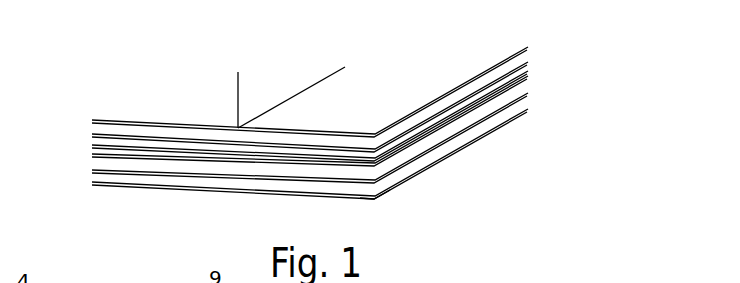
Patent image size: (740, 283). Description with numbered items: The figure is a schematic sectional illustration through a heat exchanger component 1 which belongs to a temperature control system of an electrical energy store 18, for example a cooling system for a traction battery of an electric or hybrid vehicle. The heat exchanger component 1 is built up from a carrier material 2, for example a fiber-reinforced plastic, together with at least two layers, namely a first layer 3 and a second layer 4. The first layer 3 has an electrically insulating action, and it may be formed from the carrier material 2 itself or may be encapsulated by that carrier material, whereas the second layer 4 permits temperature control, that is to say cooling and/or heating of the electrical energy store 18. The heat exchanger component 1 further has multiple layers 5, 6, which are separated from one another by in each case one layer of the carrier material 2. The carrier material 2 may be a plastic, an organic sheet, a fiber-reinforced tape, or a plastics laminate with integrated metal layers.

The heat exchanger component 1 is at (346, 145).
The carrier material 2 is at (372, 205).
The first layer 3 is at (529, 104).
The second layer 4 is at (529, 88).
The layer 5 is at (529, 69).
The layer 6 is at (529, 48).
The electrical energy store 18 is at (269, 90).